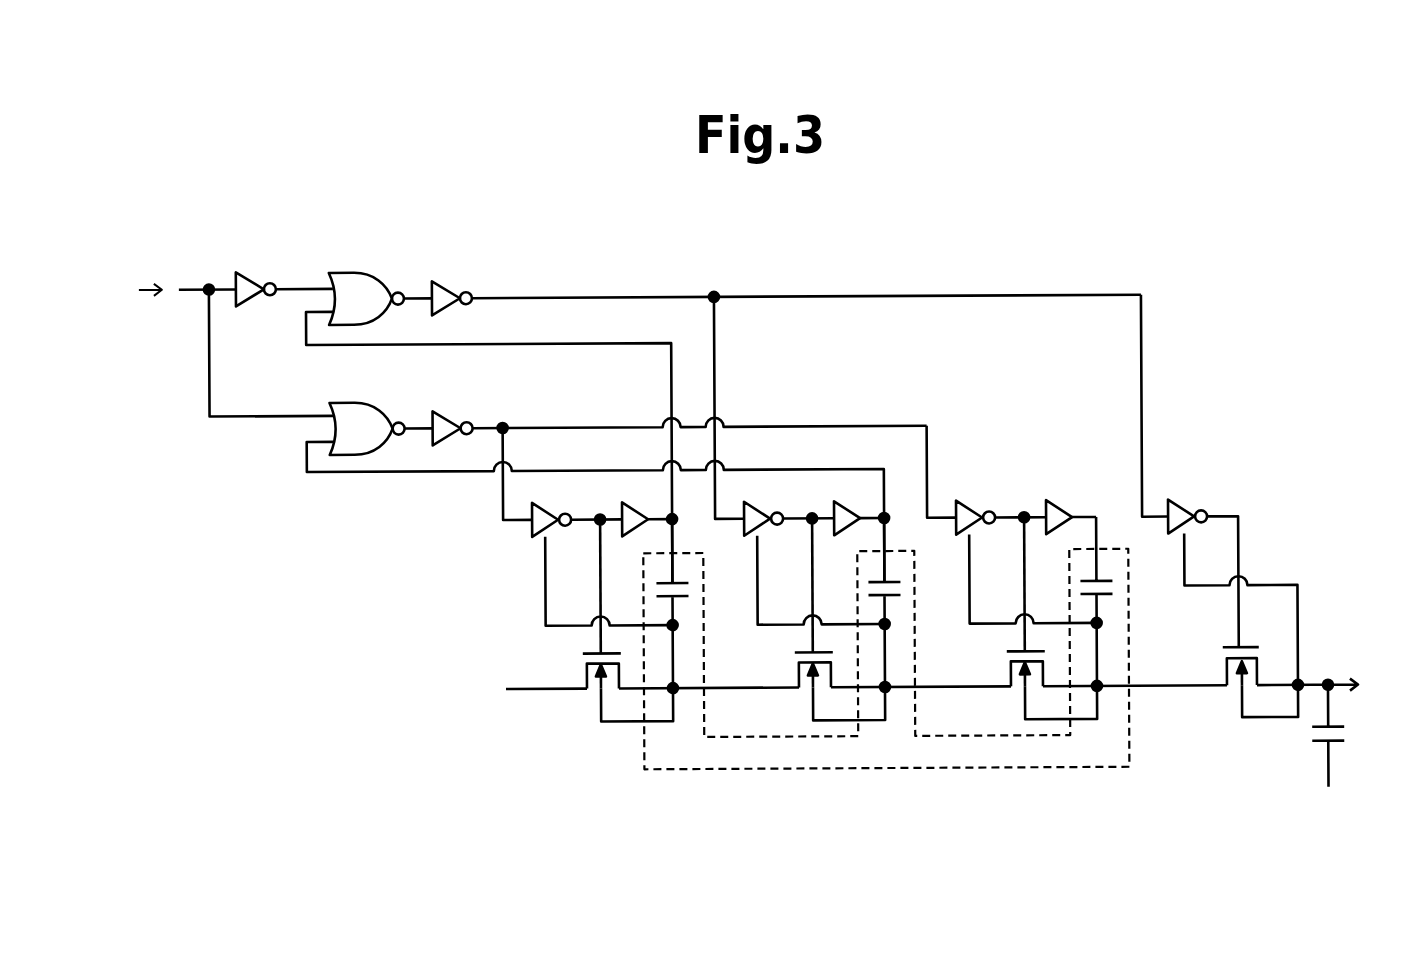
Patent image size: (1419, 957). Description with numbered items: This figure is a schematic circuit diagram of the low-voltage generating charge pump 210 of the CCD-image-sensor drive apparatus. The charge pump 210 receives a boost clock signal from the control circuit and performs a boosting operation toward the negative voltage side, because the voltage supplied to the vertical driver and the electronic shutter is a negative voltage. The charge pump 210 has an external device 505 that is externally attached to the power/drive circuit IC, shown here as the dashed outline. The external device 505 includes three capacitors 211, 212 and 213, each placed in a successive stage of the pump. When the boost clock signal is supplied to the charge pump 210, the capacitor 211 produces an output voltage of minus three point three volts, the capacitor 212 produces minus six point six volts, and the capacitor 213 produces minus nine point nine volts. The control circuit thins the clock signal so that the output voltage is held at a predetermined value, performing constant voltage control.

The low-voltage generating charge pump 210 is at (1250, 253).
The capacitor 211 is at (688, 596).
The capacitor 212 is at (900, 596).
The capacitor 213 is at (1112, 596).
The external device 505 is at (888, 770).